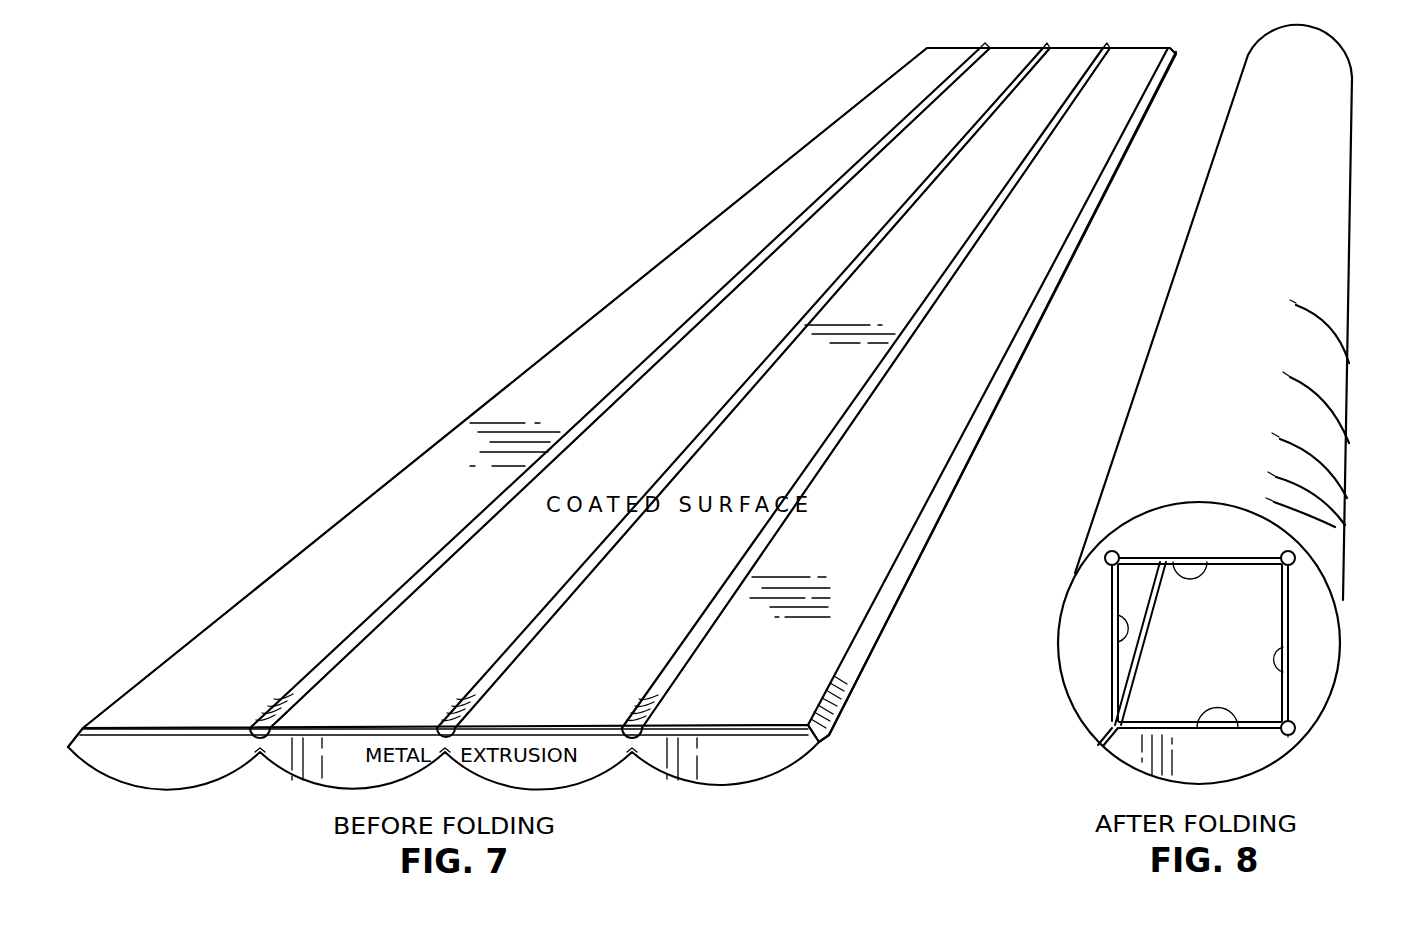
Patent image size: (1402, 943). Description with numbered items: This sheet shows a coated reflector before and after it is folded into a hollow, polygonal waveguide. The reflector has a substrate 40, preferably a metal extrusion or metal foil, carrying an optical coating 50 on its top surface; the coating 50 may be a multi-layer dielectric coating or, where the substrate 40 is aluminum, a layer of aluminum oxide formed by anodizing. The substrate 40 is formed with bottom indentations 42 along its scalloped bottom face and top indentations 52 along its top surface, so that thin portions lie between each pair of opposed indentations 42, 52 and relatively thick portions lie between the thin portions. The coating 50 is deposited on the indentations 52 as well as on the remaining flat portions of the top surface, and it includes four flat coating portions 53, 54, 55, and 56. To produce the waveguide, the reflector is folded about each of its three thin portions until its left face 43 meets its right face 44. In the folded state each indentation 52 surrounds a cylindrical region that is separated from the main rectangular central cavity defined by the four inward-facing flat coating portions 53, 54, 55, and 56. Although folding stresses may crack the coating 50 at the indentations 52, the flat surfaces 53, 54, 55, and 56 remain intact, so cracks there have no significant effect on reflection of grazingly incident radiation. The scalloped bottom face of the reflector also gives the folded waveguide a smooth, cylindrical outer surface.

In FIG. 7, the substrate 40 is at (143, 760).
In FIG. 8, the substrate 40 is at (1303, 683).
In FIG. 7, the bottom indentations 42 is at (263, 762).
In FIG. 8, the bottom indentations 42 is at (1300, 738).
In FIG. 7, the left face 43 is at (78, 738).
In FIG. 8, the left face 43 is at (1110, 740).
In FIG. 7, the right face 44 is at (821, 750).
In FIG. 8, the right face 44 is at (1104, 728).
In FIG. 7, the optical coating 50 is at (185, 730).
In FIG. 7, the top indentations 52 is at (375, 618).
In FIG. 8, the top indentations 52 is at (1105, 562).
In FIG. 7, the flat coating portion 53 is at (637, 340).
In FIG. 8, the flat coating portion 53 is at (1238, 730).
In FIG. 7, the flat coating portion 54 is at (815, 262).
In FIG. 8, the flat coating portion 54 is at (1283, 647).
In FIG. 7, the flat coating portion 55 is at (955, 212).
In FIG. 8, the flat coating portion 55 is at (1173, 560).
In FIG. 7, the flat coating portion 56 is at (1072, 153).
In FIG. 8, the flat coating portion 56 is at (1118, 615).